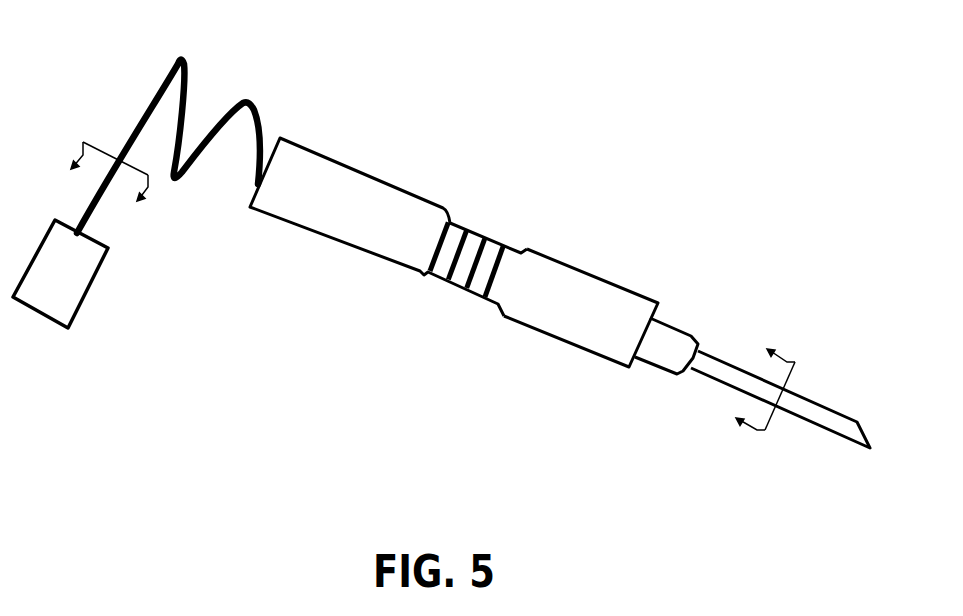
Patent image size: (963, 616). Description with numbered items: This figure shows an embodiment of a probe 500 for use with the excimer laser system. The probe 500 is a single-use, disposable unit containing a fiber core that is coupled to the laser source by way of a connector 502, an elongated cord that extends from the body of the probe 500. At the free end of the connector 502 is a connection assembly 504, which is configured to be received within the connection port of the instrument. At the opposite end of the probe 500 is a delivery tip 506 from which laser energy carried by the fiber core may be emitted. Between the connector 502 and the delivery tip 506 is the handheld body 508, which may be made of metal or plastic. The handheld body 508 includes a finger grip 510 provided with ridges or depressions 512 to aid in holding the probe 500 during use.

The probe 500 is at (703, 100).
The connector 502 is at (182, 60).
The connection assembly 504 is at (110, 248).
The delivery tip 506 is at (818, 402).
The handheld body 508 is at (570, 257).
The finger grip 510 is at (462, 220).
The ridges or depressions 512 is at (490, 237).